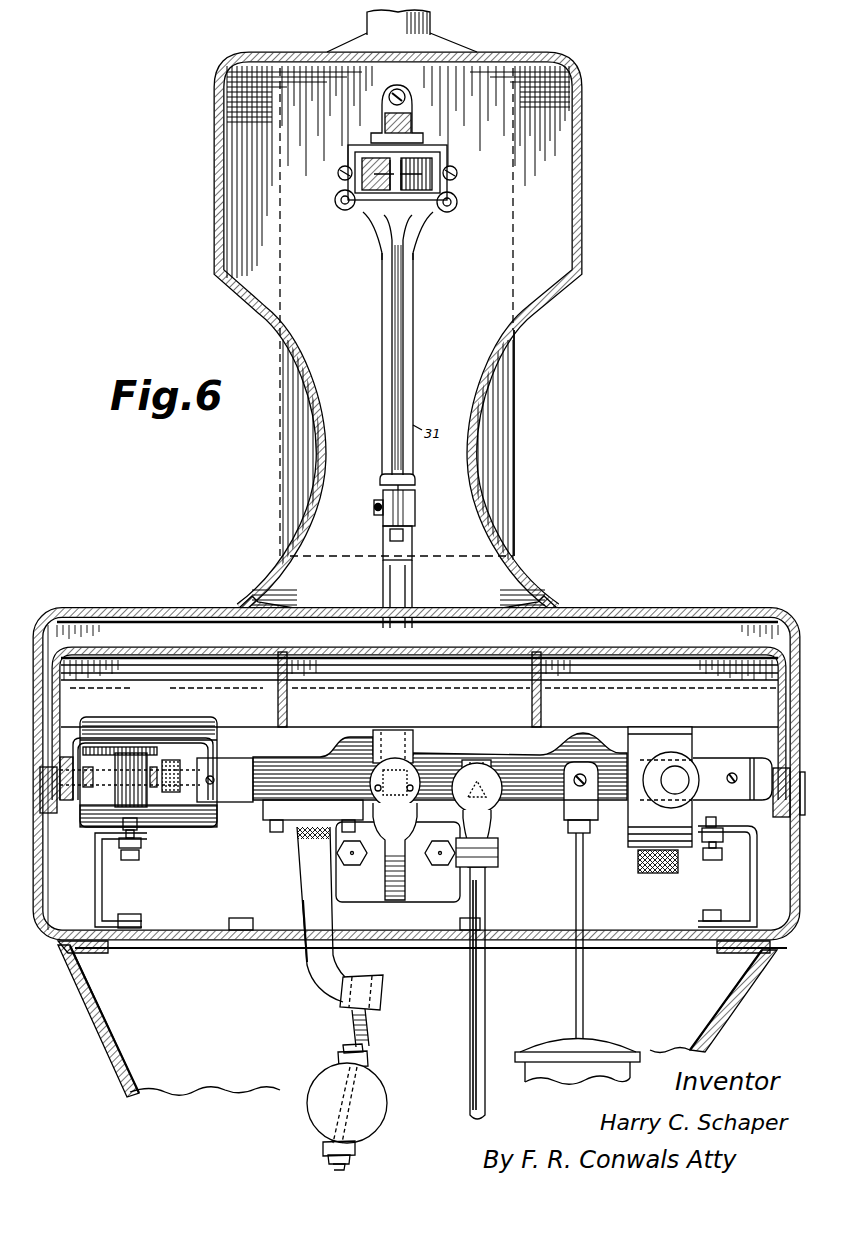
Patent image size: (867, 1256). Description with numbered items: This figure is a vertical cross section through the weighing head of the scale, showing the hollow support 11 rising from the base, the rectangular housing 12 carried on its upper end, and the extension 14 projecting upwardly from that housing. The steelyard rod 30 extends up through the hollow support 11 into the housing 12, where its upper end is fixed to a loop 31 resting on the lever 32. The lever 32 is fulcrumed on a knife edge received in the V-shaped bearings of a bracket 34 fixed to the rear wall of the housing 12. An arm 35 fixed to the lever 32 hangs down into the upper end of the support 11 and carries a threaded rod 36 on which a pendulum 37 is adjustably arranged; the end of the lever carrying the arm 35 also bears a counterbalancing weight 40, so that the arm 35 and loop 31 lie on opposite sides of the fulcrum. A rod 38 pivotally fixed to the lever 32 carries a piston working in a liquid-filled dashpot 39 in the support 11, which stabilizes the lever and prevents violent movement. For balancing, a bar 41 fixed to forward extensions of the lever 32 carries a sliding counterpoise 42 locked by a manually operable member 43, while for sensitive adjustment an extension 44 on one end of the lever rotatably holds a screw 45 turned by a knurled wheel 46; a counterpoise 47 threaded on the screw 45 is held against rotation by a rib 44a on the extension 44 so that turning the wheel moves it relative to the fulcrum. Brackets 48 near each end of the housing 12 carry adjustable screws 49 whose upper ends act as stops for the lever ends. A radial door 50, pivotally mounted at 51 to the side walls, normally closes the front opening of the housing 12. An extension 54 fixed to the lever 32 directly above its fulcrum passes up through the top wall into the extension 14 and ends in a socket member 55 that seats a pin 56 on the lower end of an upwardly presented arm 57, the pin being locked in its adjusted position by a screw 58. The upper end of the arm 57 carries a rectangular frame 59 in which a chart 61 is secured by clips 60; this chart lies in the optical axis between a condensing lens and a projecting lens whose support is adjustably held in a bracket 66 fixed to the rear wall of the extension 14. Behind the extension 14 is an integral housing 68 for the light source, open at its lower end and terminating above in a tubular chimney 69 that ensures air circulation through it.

The hollow support 11 is at (115, 1050).
The rectangular housing 12 is at (113, 614).
The extension 14 is at (214, 168).
The steelyard rod 30 is at (470, 1030).
The loop 31 is at (495, 828).
The lever 32 is at (268, 797).
The bracket 34 is at (368, 885).
The arm 35 is at (310, 893).
The threaded rod 36 is at (352, 1028).
The pendulum 37 is at (318, 1111).
The rod 38 is at (577, 888).
The dashpot 39 is at (606, 1042).
The counterbalancing weight 40 is at (128, 737).
The bar 41 is at (238, 803).
The counterpoise 42 is at (640, 735).
The manually operable member 43 is at (660, 876).
The extension 44 is at (190, 740).
The rib 44a is at (93, 747).
The screw 45 is at (132, 805).
The knurled wheel 46 is at (172, 760).
The counterpoise 47 is at (90, 828).
The brackets 48 is at (95, 892).
The adjustable screws 49 is at (130, 860).
The radial door 50 is at (637, 648).
The pivot 51 is at (68, 800).
The extension 54 is at (413, 580).
The socket member 55 is at (383, 540).
The pin 56 is at (380, 481).
The arm 57 is at (413, 333).
The screw 58 is at (416, 502).
The rectangular frame 59 is at (356, 207).
The clips 60 is at (340, 168).
The chart 61 is at (456, 208).
The bracket 66 is at (415, 125).
The housing 68 is at (505, 418).
The chimney 69 is at (372, 24).